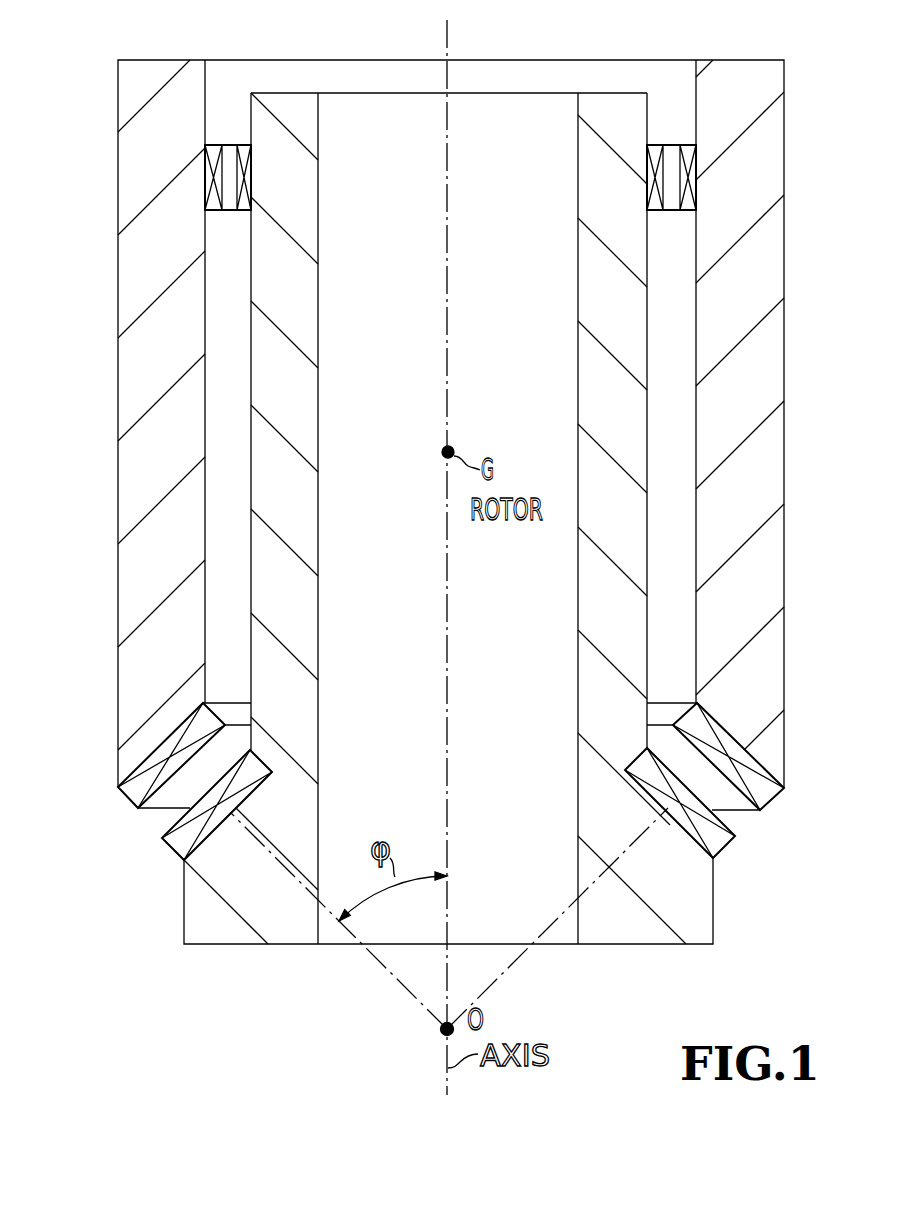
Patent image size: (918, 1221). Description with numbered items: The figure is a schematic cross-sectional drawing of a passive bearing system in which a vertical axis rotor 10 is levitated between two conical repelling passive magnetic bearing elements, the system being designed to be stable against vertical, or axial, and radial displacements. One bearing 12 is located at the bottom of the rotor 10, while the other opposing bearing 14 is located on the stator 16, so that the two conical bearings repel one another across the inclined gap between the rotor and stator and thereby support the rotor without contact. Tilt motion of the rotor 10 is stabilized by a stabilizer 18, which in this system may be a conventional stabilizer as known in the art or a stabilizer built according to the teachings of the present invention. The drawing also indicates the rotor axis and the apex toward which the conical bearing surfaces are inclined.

The rotor 10 is at (118, 268).
The bearing 12 is at (130, 805).
The opposing bearing 14 is at (172, 852).
The stator 16 is at (318, 718).
The stabilizer 18 is at (240, 145).